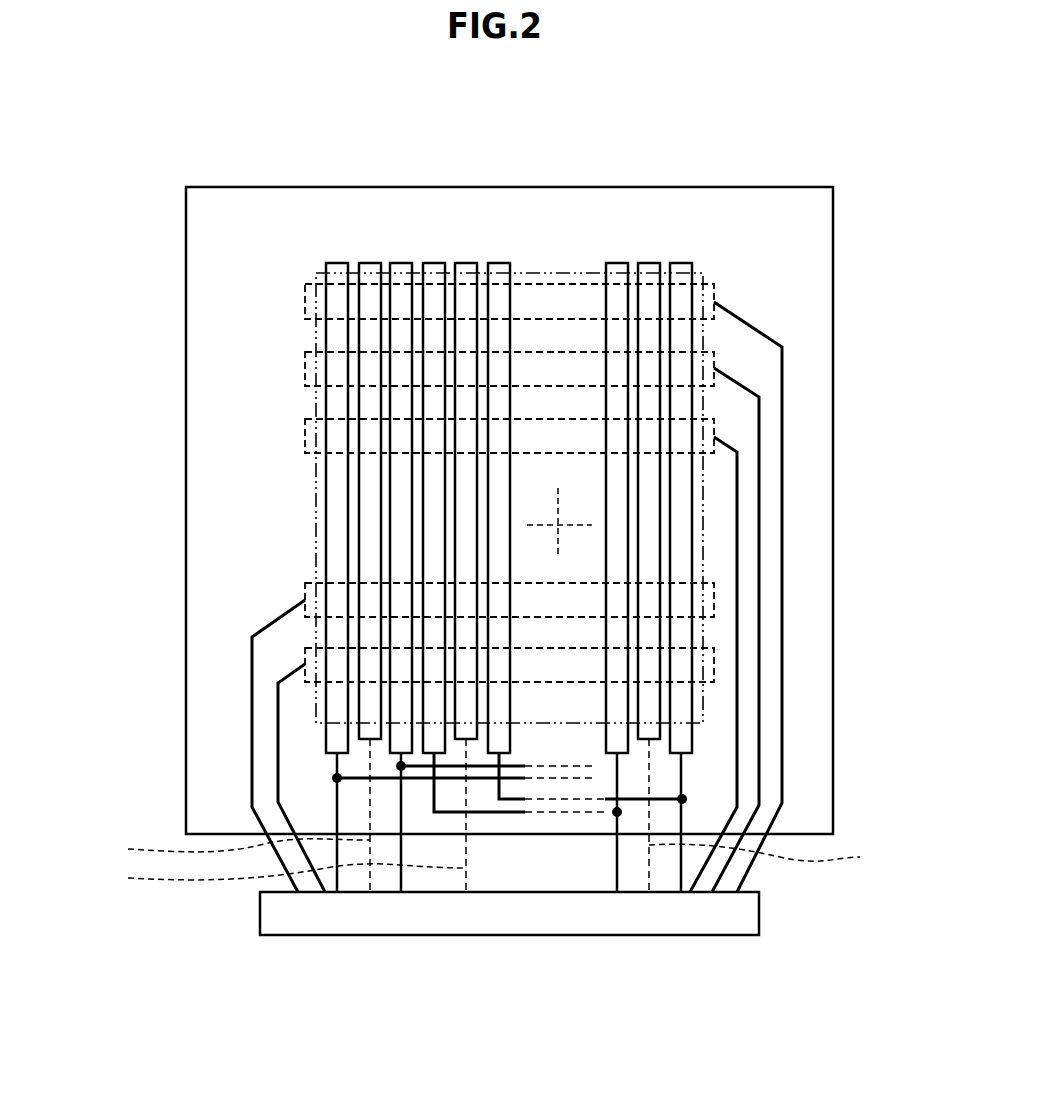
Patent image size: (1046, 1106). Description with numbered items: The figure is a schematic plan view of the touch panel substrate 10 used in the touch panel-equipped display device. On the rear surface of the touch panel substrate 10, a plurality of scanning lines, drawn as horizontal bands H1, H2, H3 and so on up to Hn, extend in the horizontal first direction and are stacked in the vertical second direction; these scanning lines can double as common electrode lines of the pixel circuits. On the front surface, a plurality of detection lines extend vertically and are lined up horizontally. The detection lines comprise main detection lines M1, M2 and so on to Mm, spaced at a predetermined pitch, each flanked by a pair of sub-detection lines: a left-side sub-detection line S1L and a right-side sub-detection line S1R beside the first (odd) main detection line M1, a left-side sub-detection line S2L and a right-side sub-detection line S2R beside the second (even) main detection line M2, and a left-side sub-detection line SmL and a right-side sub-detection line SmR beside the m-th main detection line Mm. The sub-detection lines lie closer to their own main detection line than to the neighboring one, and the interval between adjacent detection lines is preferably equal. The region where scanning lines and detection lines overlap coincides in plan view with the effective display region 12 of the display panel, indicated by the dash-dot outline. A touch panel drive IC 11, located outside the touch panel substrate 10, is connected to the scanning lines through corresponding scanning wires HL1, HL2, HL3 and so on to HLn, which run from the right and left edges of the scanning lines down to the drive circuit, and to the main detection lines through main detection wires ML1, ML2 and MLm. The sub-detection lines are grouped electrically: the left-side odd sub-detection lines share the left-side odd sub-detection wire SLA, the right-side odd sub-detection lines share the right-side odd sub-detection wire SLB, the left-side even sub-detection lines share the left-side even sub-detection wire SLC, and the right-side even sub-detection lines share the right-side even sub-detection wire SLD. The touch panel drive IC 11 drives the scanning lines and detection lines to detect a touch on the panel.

The touch panel substrate 10 is at (186, 386).
The touch panel drive IC 11 is at (513, 935).
The effective display region 12 is at (703, 395).
The scanning line H1 is at (509, 301).
The scanning line H2 is at (509, 369).
The scanning line H3 is at (509, 436).
The scanning line Hn is at (509, 600).
The left-side sub-detection line S1L is at (337, 263).
The main detection line M1 is at (370, 263).
The right-side sub-detection line S1R is at (401, 263).
The left-side sub-detection line S2L is at (434, 263).
The main detection line M2 is at (466, 263).
The right-side sub-detection line S2R is at (499, 263).
The left-side sub-detection line SmL is at (617, 263).
The main detection line Mm is at (649, 263).
The right-side sub-detection line SmR is at (681, 263).
The scanning wire HL1 is at (782, 460).
The scanning wire HL2 is at (759, 519).
The scanning wire HL3 is at (737, 580).
The scanning wire HLn is at (252, 652).
The left-side odd sub-detection wire SLA is at (340, 765).
The right-side odd sub-detection wire SLB is at (397, 801).
The left-side even sub-detection wire SLC is at (617, 783).
The right-side even sub-detection wire SLD is at (682, 760).
The main detection wire ML1 is at (224, 843).
The main detection wire ML2 is at (272, 881).
The main detection wire MLm is at (782, 858).